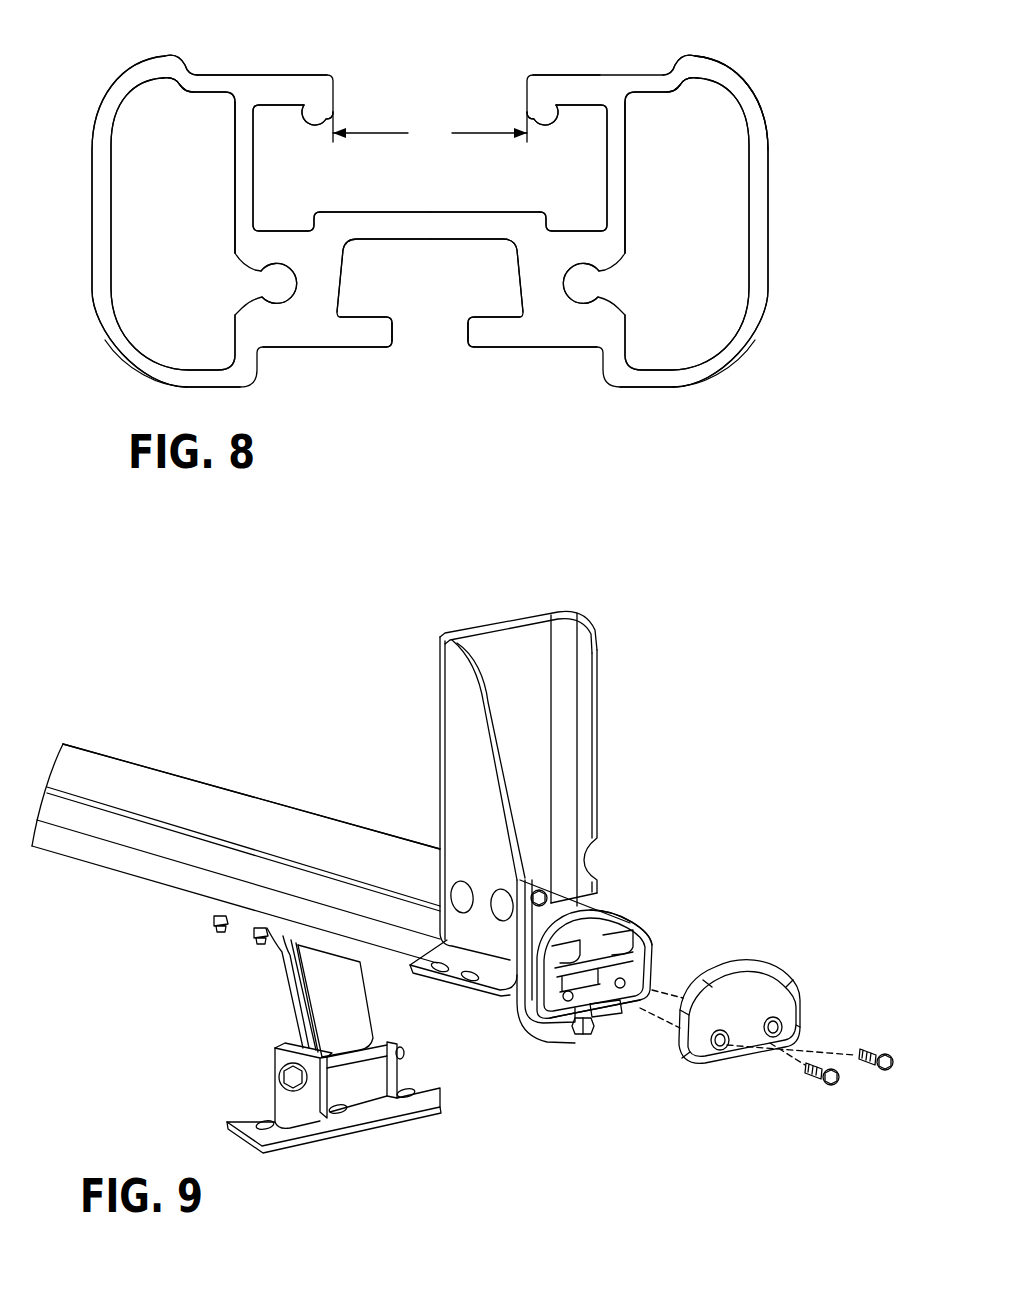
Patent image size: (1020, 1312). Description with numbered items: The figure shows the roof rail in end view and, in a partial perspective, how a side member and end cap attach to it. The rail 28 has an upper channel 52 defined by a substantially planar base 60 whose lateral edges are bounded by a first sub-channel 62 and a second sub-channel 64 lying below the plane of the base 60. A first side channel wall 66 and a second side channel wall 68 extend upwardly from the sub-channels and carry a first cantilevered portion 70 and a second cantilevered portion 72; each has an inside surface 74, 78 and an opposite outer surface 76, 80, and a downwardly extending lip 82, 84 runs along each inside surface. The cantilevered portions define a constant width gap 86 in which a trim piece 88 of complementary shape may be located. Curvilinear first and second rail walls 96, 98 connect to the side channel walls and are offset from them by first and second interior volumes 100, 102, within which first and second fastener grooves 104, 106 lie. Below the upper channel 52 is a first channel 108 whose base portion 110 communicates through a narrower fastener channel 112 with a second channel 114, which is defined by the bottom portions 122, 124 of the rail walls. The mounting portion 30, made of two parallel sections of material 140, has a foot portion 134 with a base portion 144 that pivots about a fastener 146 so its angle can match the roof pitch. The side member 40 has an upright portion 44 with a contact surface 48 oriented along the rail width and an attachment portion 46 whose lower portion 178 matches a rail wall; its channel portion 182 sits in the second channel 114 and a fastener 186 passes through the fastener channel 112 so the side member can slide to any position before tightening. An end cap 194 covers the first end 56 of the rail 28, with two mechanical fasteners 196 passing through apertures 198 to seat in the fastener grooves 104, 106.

In FIG. 8, the rail 28 is at (718, 65).
In FIG. 9, the rail 28 is at (78, 862).
In FIG. 9, the first mounting portion 30 is at (294, 1034).
In FIG. 9, the first side member 40 is at (503, 824).
In FIG. 9, the upright portion 44 is at (452, 759).
In FIG. 9, the attachment portion 46 is at (530, 1043).
In FIG. 9, the contact surface 48 is at (497, 613).
In FIG. 8, the upper channel 52 is at (456, 194).
In FIG. 9, the upper channel 52 is at (631, 914).
In FIG. 9, the first end 56 is at (620, 880).
In FIG. 8, the base 60 is at (390, 212).
In FIG. 8, the first sub-channel 62 is at (318, 197).
In FIG. 8, the second sub-channel 64 is at (542, 197).
In FIG. 8, the first side channel wall 66 is at (235, 163).
In FIG. 8, the second side channel wall 68 is at (626, 163).
In FIG. 8, the first cantilevered portion 70 is at (227, 83).
In FIG. 8, the second cantilevered portion 72 is at (580, 80).
In FIG. 8, the inside surface 74 is at (290, 105).
In FIG. 8, the outer surface 76 is at (262, 75).
In FIG. 8, the inside surface 78 is at (598, 118).
In FIG. 8, the outer surface 80 is at (545, 75).
In FIG. 8, the lip 82 is at (322, 121).
In FIG. 8, the lip 84 is at (540, 120).
In FIG. 8, the gap 86 is at (430, 130).
In FIG. 9, the trim piece 88 is at (172, 787).
In FIG. 8, the first rail wall 96 is at (92, 185).
In FIG. 8, the second rail wall 98 is at (770, 165).
In FIG. 8, the first interior volume 100 is at (192, 246).
In FIG. 8, the second interior volume 102 is at (711, 246).
In FIG. 8, the first fastener groove 104 is at (273, 262).
In FIG. 8, the second fastener groove 106 is at (588, 262).
In FIG. 8, the first channel 108 is at (449, 291).
In FIG. 9, the first channel 108 is at (640, 945).
In FIG. 8, the base portion 110 is at (358, 317).
In FIG. 8, the fastener channel 112 is at (449, 346).
In FIG. 8, the second channel 114 is at (449, 399).
In FIG. 9, the second channel 114 is at (660, 988).
In FIG. 8, the bottom portion 122 is at (180, 391).
In FIG. 8, the bottom portion 124 is at (680, 391).
In FIG. 9, the foot portion 134 is at (290, 1026).
In FIG. 9, the parallel sections of material 140 is at (275, 959).
In FIG. 9, the base portion 144 is at (228, 1122).
In FIG. 9, the fastener 146 is at (280, 1076).
In FIG. 9, the lower portion 178 is at (487, 1015).
In FIG. 9, the channel portion 182 is at (603, 1018).
In FIG. 9, the fastener 186 is at (581, 1037).
In FIG. 9, the end cap 194 is at (759, 1023).
In FIG. 9, the mechanical fasteners 196 is at (878, 1072).
In FIG. 9, the apertures 198 is at (770, 1040).